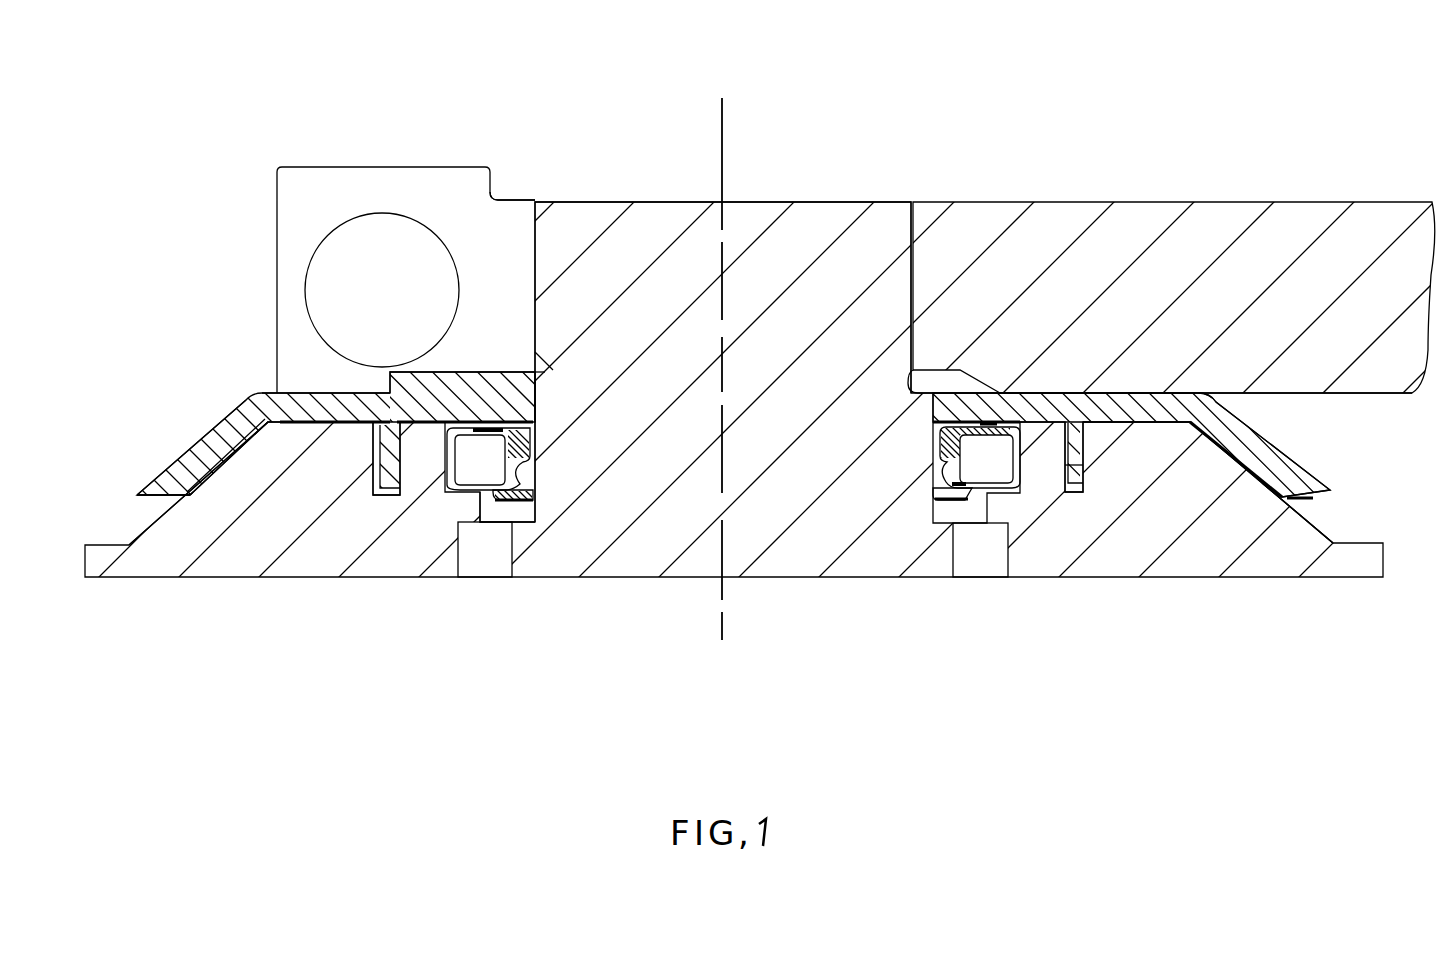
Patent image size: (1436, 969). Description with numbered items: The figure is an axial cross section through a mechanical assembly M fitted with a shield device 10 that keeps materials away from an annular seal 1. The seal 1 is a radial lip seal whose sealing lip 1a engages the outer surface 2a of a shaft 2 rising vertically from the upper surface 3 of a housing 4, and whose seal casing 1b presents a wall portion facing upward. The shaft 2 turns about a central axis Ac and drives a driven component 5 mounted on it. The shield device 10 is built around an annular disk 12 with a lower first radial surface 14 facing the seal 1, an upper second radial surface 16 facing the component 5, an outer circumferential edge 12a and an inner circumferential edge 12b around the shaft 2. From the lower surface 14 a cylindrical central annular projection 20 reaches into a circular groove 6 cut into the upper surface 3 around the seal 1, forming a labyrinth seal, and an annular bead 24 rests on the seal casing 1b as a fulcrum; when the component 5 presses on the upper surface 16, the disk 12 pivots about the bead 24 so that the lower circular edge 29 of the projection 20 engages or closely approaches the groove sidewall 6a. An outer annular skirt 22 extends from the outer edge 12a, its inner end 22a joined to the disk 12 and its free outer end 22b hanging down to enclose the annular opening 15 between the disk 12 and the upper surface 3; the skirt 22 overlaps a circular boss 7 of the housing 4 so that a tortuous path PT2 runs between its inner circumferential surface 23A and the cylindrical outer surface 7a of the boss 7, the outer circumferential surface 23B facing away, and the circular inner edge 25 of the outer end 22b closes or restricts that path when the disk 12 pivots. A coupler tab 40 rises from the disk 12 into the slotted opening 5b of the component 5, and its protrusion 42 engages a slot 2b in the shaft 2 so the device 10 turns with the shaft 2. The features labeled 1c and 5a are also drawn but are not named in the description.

The annular seal 1 is at (560, 455).
The sealing lip 1a is at (538, 473).
The seal casing 1b is at (486, 428).
The seal portion 1c is at (547, 384).
The shaft 2 is at (848, 204).
The outer surface 2a is at (535, 505).
The slot 2b is at (558, 392).
The upper surface 3 is at (1122, 422).
The housing 4 is at (278, 605).
The driven component 5 is at (1160, 202).
The cover lower surface 5a is at (1364, 395).
The slotted opening 5b is at (496, 218).
The circular groove 6 is at (1091, 498).
The sidewall 6a is at (1083, 465).
The boss 7 is at (152, 517).
The cylindrical outer surface 7a is at (1307, 517).
The shield device 10 is at (214, 326).
The annular disk 12 is at (1029, 382).
The outer circumferential edge 12a is at (1191, 395).
The inner circumferential edge 12b is at (932, 407).
The first radial surface 14 is at (1140, 423).
The annular opening 15 is at (281, 422).
The second radial surface 16 is at (1062, 393).
The central annular projection 20 is at (372, 461).
The outer annular skirt 22 is at (193, 430).
The inner end 22a is at (250, 396).
The free outer end 22b is at (153, 488).
The inner circumferential surface 23A is at (222, 468).
The outer circumferential surface 23B is at (180, 457).
The annular bead 24 is at (992, 440).
The circular inner edge 25 is at (190, 496).
The lower circular edge 29 is at (400, 485).
The coupler tab 40 is at (463, 368).
The protrusion 42 is at (553, 369).
The mechanical assembly M is at (400, 97).
The central axis Ac is at (722, 112).
The tortuous path PT2 is at (1258, 472).